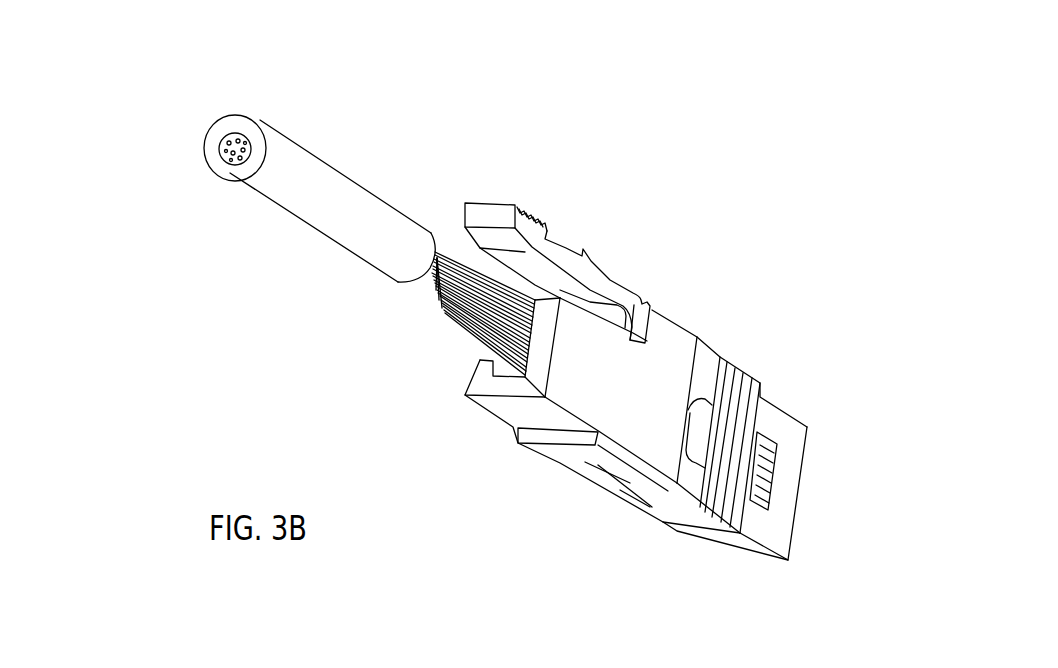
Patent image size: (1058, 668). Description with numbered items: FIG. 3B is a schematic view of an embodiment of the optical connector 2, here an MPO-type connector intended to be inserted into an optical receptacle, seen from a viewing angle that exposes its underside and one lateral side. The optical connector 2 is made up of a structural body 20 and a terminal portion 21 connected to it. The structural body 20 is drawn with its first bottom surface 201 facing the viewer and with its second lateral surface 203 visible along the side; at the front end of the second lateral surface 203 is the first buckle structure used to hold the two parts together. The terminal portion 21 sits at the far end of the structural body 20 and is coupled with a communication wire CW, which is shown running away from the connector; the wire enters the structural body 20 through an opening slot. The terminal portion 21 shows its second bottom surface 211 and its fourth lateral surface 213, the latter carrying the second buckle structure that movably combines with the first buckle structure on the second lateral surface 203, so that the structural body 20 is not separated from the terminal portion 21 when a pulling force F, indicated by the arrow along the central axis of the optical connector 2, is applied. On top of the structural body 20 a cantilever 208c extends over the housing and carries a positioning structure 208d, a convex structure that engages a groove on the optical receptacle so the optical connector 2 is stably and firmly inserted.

The optical connector 2 is at (443, 115).
The pulling force F is at (235, 148).
The communication wire CW is at (283, 185).
The structural body 20 is at (472, 372).
The second lateral surface 203 is at (648, 368).
The first bottom surface 201 is at (573, 465).
The cantilever 208c is at (482, 213).
The positioning structure 208d is at (582, 252).
The terminal portion 21 is at (762, 382).
The second bottom surface 211 is at (742, 547).
The fourth lateral surface 213 is at (743, 460).